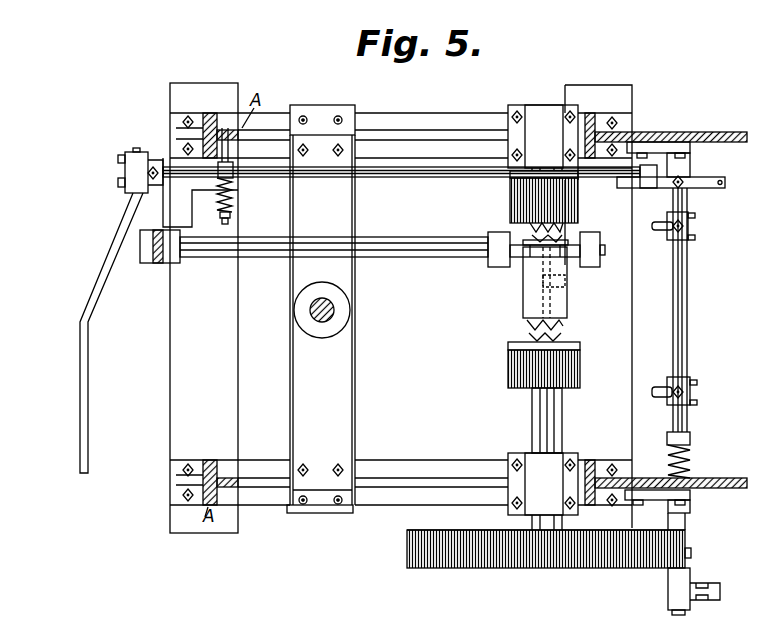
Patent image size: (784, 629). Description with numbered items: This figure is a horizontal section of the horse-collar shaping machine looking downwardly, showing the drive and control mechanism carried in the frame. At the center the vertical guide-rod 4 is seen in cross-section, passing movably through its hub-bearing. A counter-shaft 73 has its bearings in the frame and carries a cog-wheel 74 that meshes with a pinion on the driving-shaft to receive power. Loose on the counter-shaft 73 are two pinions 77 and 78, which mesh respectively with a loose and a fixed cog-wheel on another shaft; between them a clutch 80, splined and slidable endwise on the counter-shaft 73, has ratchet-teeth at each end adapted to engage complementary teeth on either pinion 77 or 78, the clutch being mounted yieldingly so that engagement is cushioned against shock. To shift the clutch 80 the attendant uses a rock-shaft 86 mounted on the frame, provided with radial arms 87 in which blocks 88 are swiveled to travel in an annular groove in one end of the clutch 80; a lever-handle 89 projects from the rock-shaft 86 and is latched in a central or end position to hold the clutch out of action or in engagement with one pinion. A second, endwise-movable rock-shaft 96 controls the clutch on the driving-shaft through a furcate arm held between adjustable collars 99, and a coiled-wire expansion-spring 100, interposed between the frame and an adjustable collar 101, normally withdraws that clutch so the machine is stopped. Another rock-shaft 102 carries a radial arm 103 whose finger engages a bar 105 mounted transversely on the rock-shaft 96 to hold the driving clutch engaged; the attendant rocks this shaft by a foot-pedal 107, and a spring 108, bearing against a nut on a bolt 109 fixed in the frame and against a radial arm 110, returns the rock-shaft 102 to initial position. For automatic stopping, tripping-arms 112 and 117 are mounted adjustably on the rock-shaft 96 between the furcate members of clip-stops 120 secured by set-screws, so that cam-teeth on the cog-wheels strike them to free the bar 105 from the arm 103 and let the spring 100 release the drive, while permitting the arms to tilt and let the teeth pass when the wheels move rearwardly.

The guide-rod 4 is at (334, 312).
The counter-shaft 73 is at (563, 420).
The cog-wheel 74 is at (549, 569).
The pinion 77 is at (578, 370).
The pinion 78 is at (578, 200).
The clutch 80 is at (567, 305).
The rock-shaft 86 is at (410, 257).
The radial arms 87 is at (498, 245).
The blocks 88 is at (518, 258).
The lever-handle 89 is at (158, 263).
The rock-shaft 96 is at (687, 305).
The collars 99 is at (691, 556).
The coiled-wire expansion-spring 100 is at (690, 457).
The collar 101 is at (690, 439).
The rock-shaft 102 is at (398, 176).
The radial arm 103 is at (650, 175).
The bar 105 is at (671, 310).
The foot-pedal 107 is at (80, 372).
The spring 108 is at (232, 200).
The bolt 109 is at (222, 221).
The radial arm 110 is at (228, 168).
The tripping-arm 112 is at (658, 398).
The tripping-arm 117 is at (657, 231).
The clip-stops 120 is at (688, 216).